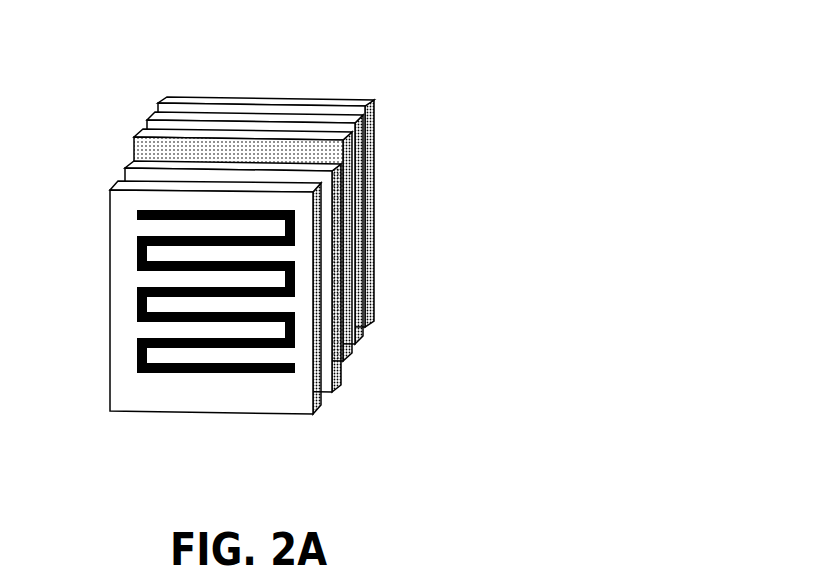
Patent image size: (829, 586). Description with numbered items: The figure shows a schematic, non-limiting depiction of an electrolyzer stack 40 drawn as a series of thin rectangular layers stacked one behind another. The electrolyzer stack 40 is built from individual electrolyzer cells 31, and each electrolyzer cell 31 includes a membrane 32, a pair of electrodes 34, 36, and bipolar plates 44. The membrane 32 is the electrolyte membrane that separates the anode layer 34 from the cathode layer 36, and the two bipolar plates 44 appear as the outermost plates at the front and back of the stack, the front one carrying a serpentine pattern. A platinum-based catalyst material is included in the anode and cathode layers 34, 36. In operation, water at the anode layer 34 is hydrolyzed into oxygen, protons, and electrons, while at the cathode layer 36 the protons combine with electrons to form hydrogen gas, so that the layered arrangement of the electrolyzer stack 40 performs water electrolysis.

The electrolyzer stack 40 is at (292, 256).
The electrolyzer cell 31 is at (195, 107).
The membrane 32 is at (338, 260).
The anode layer 34 is at (373, 272).
The cathode layer 36 is at (330, 303).
The bipolar plate 44 is at (373, 147).